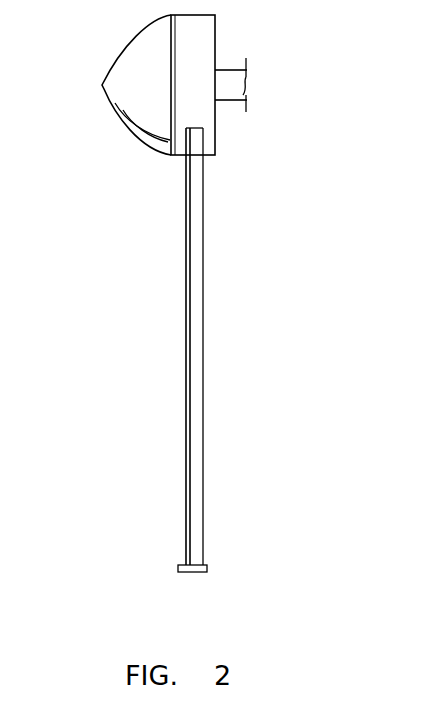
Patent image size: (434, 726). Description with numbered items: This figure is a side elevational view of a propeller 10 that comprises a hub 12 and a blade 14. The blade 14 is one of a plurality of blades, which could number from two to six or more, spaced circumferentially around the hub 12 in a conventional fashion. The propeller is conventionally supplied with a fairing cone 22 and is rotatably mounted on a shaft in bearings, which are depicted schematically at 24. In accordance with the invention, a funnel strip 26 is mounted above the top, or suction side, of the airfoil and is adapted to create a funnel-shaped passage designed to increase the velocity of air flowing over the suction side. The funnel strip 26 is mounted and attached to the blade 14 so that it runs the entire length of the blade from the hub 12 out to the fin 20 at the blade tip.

The propeller 10 is at (170, 253).
The hub 12 is at (171, 115).
The blade 14 is at (203, 353).
The fin 20 is at (192, 570).
The fairing cone 22 is at (142, 32).
The bearings 24 is at (223, 105).
The funnel strip 26 is at (186, 350).